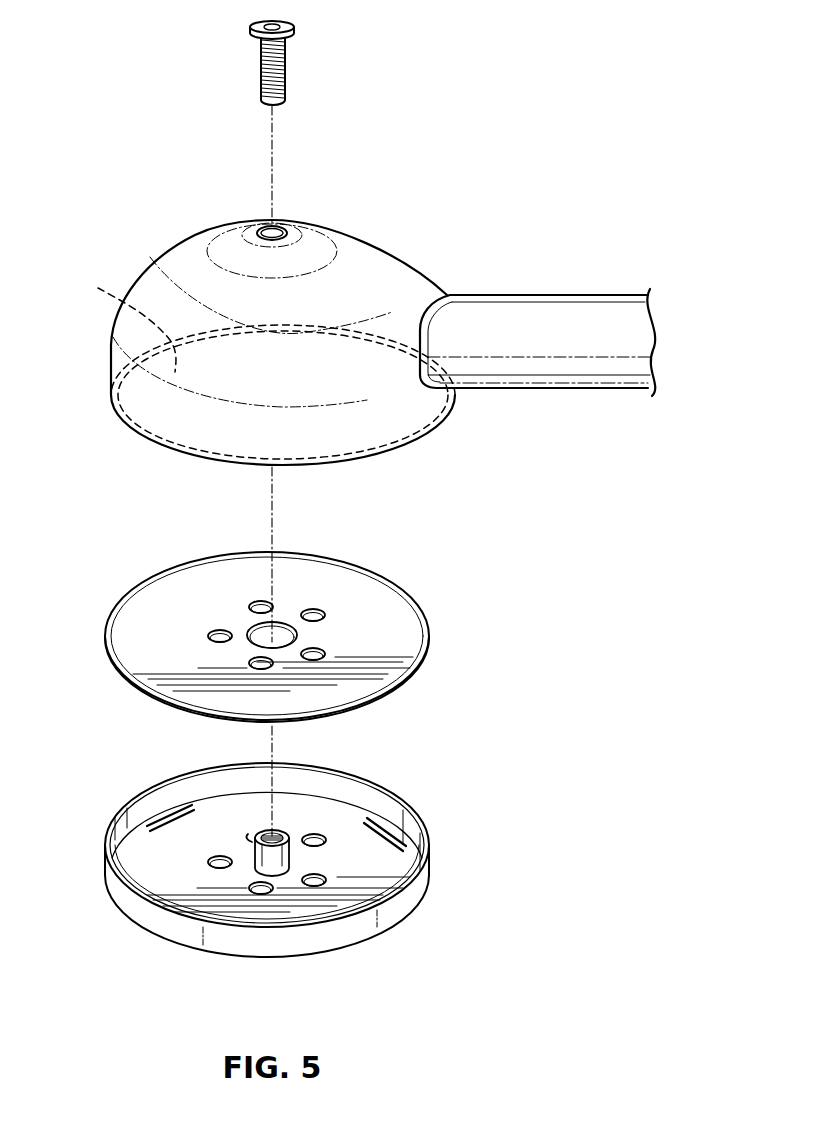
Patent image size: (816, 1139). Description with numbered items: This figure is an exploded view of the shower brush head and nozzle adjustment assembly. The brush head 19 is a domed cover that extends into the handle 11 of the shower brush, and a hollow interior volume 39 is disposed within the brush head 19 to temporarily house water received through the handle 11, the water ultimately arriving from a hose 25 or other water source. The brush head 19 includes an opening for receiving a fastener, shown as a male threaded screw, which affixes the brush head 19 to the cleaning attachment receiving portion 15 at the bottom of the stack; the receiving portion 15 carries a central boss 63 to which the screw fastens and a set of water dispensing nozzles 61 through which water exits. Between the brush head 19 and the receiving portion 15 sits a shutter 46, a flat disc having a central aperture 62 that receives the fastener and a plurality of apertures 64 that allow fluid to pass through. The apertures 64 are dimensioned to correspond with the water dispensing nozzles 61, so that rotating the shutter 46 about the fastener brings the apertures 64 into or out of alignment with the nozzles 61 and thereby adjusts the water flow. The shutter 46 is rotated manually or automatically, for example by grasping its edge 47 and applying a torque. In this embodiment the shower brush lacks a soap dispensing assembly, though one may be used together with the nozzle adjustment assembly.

The handle 11 is at (548, 322).
The cleaning attachment receiving portion 15 is at (295, 860).
The brush head 19 is at (360, 260).
The hose 25 is at (286, 58).
The hollow interior volume 39 is at (127, 319).
The shutter 46 is at (266, 635).
The edge 47 is at (108, 628).
The water dispensing nozzles 61 is at (318, 838).
The central aperture 62 is at (284, 626).
The boss 63 is at (268, 836).
The plurality of apertures 64 is at (252, 606).